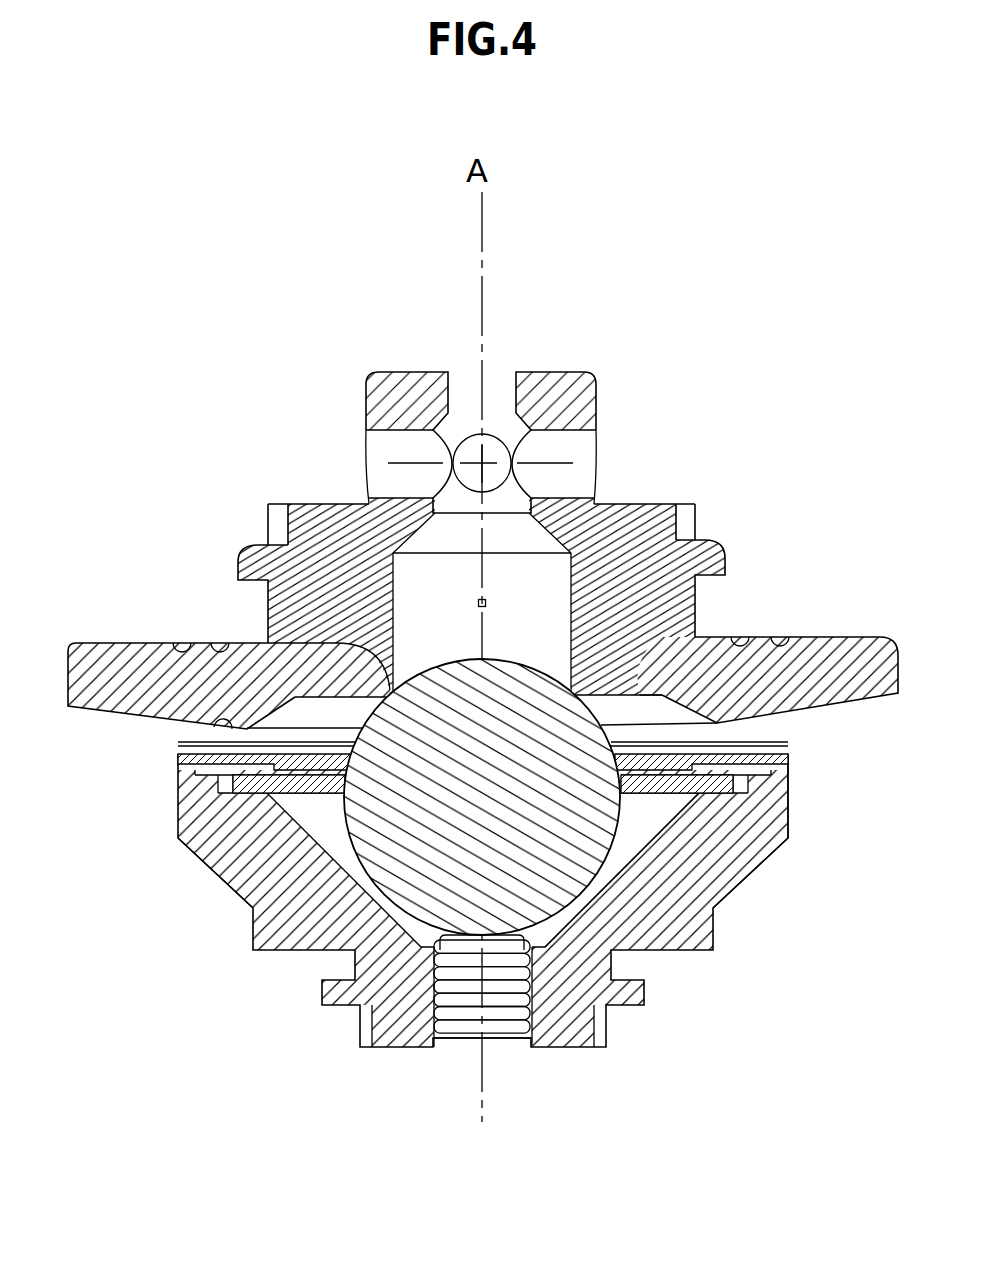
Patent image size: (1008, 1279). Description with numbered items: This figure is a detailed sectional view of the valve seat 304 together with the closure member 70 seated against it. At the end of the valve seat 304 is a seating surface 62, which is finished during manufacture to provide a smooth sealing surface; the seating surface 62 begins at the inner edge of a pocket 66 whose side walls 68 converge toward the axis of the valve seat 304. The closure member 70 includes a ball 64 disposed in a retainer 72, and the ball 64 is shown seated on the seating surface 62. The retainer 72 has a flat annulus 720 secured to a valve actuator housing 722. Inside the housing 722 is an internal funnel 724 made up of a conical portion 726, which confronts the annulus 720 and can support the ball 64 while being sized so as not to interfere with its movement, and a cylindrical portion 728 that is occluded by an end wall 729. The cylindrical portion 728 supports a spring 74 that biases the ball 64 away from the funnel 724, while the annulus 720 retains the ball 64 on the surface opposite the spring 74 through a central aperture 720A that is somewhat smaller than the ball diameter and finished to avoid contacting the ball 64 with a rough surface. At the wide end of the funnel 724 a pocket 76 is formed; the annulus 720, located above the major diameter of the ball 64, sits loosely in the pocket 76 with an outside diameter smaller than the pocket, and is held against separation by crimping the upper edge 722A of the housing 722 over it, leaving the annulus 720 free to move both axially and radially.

The valve seat 304 is at (301, 393).
The seating surface 62 is at (268, 643).
The ball 64 is at (430, 893).
The pocket 66 is at (640, 707).
The side walls 68 is at (703, 693).
The closure member 70 is at (170, 893).
The retainer 72 is at (768, 808).
The spring 74 is at (537, 1003).
The pocket 76 is at (218, 776).
The flat annulus 720 is at (738, 778).
The central aperture 720A is at (620, 736).
The valve actuator housing 722 is at (697, 873).
The upper edge 722A is at (245, 731).
The internal funnel 724 is at (667, 885).
The conical portion 726 is at (716, 833).
The cylindrical portion 728 is at (427, 1013).
The end wall 729 is at (503, 1040).